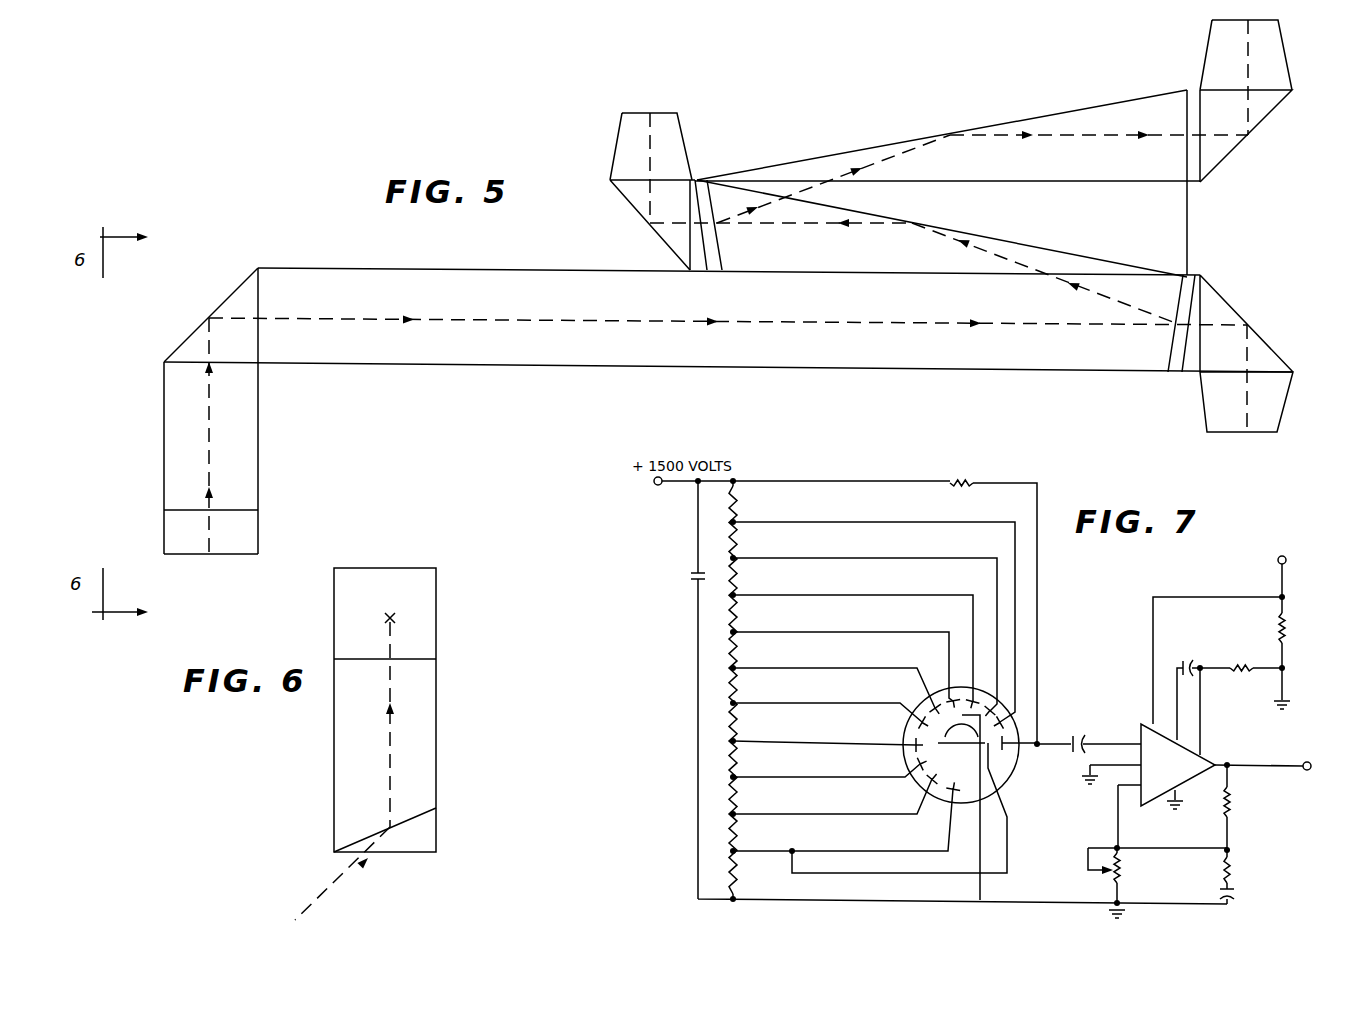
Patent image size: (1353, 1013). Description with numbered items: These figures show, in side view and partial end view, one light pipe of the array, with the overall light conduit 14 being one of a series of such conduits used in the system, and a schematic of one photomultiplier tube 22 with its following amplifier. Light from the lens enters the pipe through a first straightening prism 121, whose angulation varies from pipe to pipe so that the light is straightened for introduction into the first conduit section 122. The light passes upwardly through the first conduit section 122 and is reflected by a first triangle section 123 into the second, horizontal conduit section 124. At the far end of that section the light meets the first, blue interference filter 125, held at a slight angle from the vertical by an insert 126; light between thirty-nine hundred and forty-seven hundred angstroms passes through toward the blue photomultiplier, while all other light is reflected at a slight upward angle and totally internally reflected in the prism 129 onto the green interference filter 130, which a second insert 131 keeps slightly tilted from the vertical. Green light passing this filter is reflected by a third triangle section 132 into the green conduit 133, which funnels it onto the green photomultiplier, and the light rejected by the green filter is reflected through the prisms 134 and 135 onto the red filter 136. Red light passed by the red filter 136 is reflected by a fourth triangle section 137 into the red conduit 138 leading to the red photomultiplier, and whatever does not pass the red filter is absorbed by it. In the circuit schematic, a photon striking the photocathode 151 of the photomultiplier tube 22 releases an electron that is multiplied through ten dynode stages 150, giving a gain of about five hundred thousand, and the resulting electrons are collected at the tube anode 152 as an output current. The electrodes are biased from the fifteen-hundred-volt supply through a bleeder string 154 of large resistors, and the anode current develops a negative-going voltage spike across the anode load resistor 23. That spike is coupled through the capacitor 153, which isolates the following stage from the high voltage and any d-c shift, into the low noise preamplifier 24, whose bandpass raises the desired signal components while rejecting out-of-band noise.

In FIG. 5, the optical ring laser cavity block 14 is at (489, 266).
In FIG. 6, the optical ring laser cavity block 14 is at (444, 626).
In FIG. 7, the photomultiplier tube 22 is at (672, 788).
In FIG. 7, the anode load resistor 23 is at (970, 467).
In FIG. 7, the low noise preamplifier 24 is at (1312, 852).
In FIG. 5, the first straightening prism 121 is at (180, 550).
In FIG. 6, the first straightening prism 121 is at (425, 827).
In FIG. 5, the first conduit section 122 is at (247, 420).
In FIG. 6, the first conduit section 122 is at (335, 738).
In FIG. 5, the first triangle section 123 is at (197, 340).
In FIG. 6, the first triangle section 123 is at (335, 618).
In FIG. 5, the second conduit section 124 is at (408, 273).
In FIG. 5, the blue interference filter 125 is at (1163, 341).
In FIG. 5, the insert 126 is at (1222, 353).
In FIG. 5, the prism 129 is at (915, 265).
In FIG. 5, the green interference filter 130 is at (702, 176).
In FIG. 5, the insert 131 is at (697, 257).
In FIG. 5, the third triangle section 132 is at (638, 202).
In FIG. 5, the green conduit 133 is at (623, 137).
In FIG. 5, the prism 134 is at (994, 217).
In FIG. 5, the prism 135 is at (994, 172).
In FIG. 5, the red filter 136 is at (1193, 97).
In FIG. 5, the fourth triangle section 137 is at (1260, 117).
In FIG. 5, the red conduit 138 is at (1287, 54).
In FIG. 7, the dynode stages 150 is at (998, 702).
In FIG. 7, the photocathode 151 is at (942, 738).
In FIG. 7, the tube anode 152 is at (1005, 746).
In FIG. 7, the capacitor 153 is at (1089, 744).
In FIG. 7, the bleeder string 154 is at (718, 654).